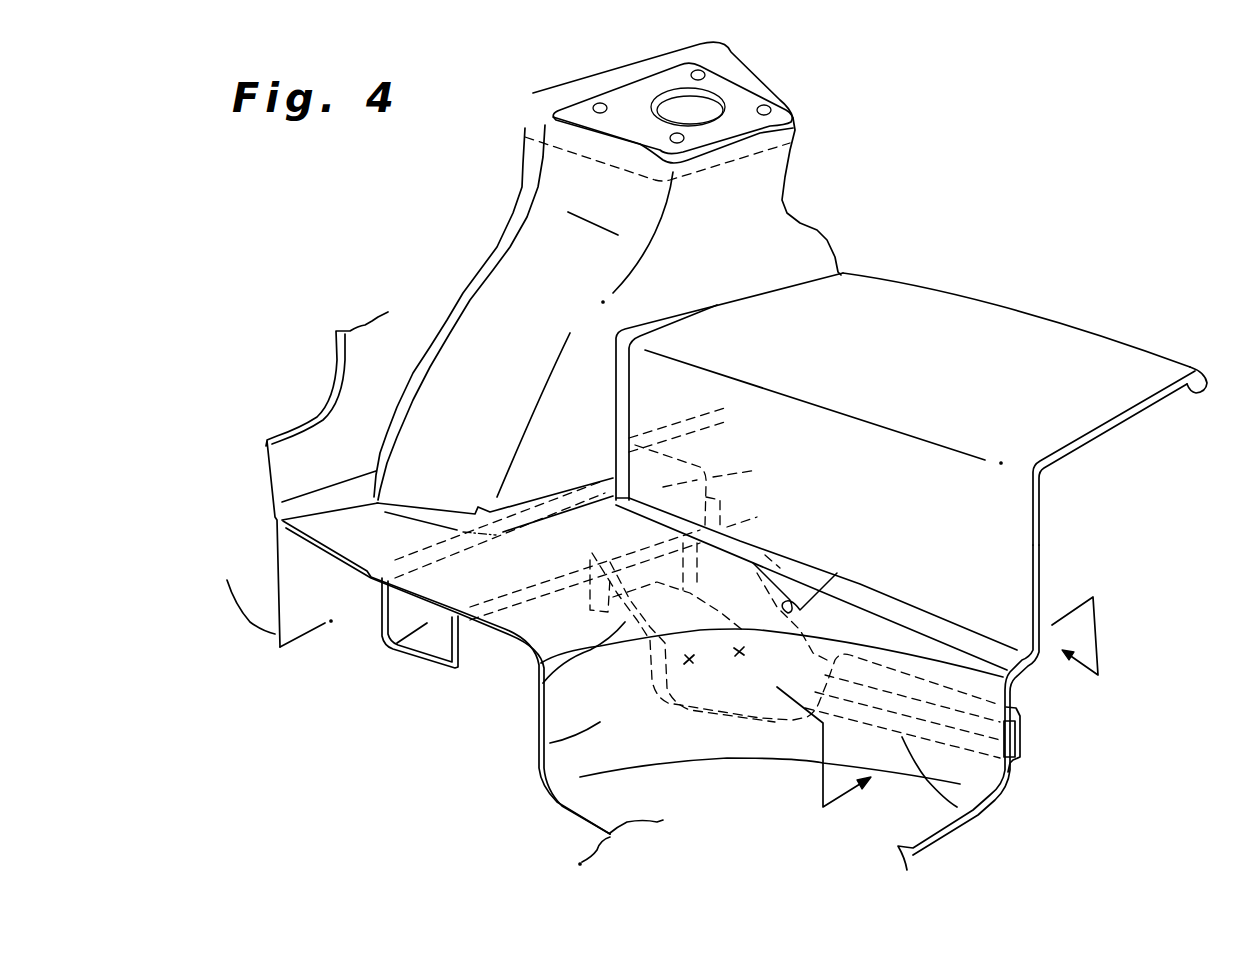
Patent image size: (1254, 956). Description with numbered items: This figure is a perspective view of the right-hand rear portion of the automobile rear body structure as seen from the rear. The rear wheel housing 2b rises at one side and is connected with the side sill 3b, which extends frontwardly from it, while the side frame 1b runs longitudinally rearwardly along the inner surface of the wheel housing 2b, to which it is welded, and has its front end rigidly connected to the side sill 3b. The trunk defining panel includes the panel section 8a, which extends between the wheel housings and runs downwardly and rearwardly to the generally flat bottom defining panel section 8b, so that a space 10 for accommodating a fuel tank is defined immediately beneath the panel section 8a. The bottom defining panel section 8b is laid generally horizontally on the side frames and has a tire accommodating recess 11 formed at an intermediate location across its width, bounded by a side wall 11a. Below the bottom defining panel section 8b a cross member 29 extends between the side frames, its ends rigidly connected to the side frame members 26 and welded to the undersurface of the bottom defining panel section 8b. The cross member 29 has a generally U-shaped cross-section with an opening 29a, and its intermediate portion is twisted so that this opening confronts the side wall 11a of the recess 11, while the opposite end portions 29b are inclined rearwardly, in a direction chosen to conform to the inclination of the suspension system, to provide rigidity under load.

The left-hand rear wheel housing 2b is at (470, 353).
The side sill 3b is at (257, 628).
The bottom defining panel section 8b is at (513, 647).
The side frame member 26 is at (400, 647).
The side frame 1b is at (431, 642).
The panel section 8a is at (1025, 336).
The space 10 is at (1098, 497).
The cross member 29 is at (958, 808).
The opening of the cross member 29a is at (541, 684).
The opposite end portions of the cross member 29b is at (837, 573).
The side wall 11a is at (550, 743).
The tire accommodating recess 11 is at (597, 797).